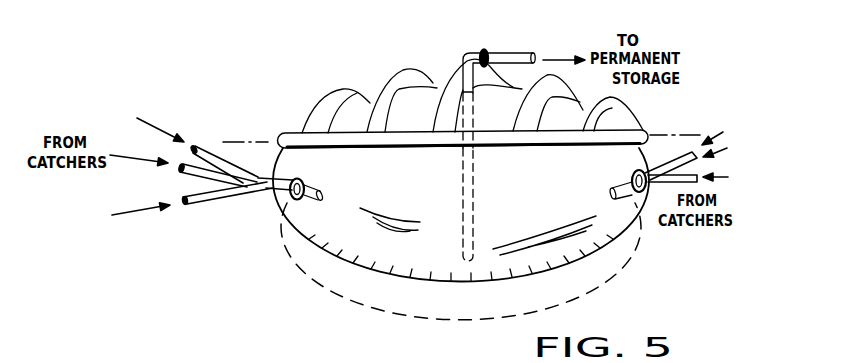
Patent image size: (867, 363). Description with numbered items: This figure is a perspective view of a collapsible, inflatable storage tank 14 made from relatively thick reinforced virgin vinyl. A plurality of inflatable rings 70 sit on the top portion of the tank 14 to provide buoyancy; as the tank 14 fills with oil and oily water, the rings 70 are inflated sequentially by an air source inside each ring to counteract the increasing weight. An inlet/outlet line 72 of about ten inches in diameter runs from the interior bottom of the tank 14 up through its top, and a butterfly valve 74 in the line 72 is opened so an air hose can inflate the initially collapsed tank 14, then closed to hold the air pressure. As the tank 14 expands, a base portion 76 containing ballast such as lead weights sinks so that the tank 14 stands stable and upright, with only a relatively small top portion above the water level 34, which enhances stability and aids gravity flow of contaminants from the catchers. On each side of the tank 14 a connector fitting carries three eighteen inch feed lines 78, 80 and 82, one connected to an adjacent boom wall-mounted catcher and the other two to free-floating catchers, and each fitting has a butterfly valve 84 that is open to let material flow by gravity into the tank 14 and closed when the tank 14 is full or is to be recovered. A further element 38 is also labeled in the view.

The collapsible storage tank 14 is at (309, 102).
The water level 34 is at (690, 135).
The axis center line 38 is at (264, 141).
The inflatable rings 70 is at (343, 90).
The inlet/outlet line 72 is at (504, 54).
The butterfly valve 74 is at (484, 50).
The base portion 76 is at (425, 281).
The feed line 78 is at (196, 145).
The feed line 80 is at (180, 176).
The feed line 82 is at (191, 204).
The butterfly valve 84 is at (298, 180).